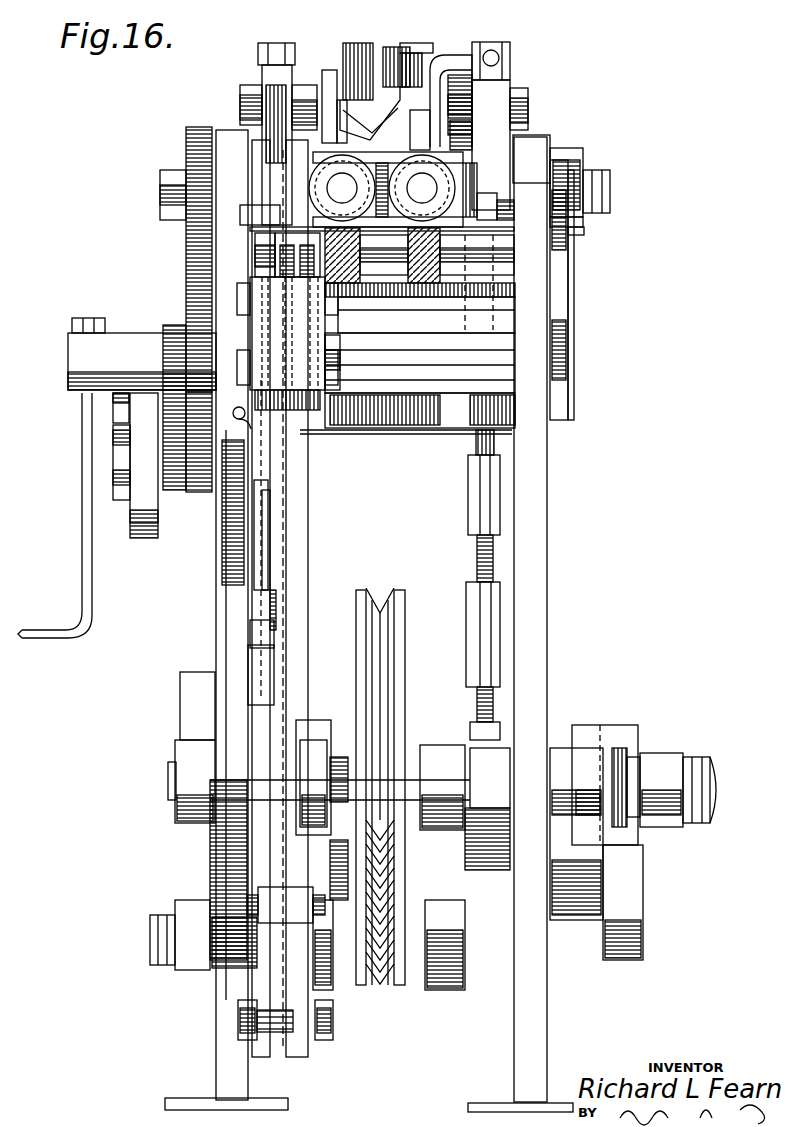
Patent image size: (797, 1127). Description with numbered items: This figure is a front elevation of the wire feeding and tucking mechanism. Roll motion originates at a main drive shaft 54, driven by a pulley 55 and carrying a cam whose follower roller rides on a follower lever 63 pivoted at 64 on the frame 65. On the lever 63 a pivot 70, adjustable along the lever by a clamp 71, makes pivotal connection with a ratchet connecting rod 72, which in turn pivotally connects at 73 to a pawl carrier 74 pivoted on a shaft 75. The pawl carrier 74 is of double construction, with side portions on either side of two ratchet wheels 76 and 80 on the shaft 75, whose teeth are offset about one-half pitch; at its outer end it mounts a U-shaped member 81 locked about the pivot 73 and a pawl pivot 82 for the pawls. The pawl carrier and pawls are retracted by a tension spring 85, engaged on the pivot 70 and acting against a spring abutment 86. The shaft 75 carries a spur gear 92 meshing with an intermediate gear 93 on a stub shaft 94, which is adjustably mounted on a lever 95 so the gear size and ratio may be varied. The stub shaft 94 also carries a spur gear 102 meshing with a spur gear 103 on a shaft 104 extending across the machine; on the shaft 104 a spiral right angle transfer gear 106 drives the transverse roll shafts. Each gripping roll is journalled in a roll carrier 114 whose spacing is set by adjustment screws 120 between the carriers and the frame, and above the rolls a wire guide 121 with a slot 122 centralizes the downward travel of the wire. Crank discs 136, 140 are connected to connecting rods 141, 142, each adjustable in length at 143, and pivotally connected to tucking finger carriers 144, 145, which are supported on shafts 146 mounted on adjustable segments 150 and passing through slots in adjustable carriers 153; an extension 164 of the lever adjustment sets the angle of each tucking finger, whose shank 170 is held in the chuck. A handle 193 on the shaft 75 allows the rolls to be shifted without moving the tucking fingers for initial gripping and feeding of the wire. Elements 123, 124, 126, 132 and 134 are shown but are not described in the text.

The main drive shaft 54 is at (168, 772).
The pulley 55 is at (396, 624).
The follower lever 63 is at (280, 990).
The pivot 64 is at (150, 940).
The frame 65 is at (216, 605).
The pivot 70 is at (210, 907).
The clamp 71 is at (333, 1020).
The ratchet connecting rod 72 is at (286, 676).
The ratchet connecting rod pivot 73 is at (357, 434).
The pawl carrier 74 is at (380, 332).
The shaft 75 is at (424, 357).
The ratchet wheel 76 is at (273, 240).
The ratchet wheel 80 is at (297, 251).
The U-shaped member 81 is at (340, 335).
The pawl pivot 82 is at (243, 302).
The tension spring 85 is at (226, 556).
The spring abutment 86 is at (234, 408).
The spur gear 92 is at (172, 325).
The intermediate gear 93 is at (155, 441).
The stub shaft 94 is at (113, 406).
The lever 95 is at (138, 540).
The spur gear 102 is at (199, 455).
The spur gear 103 is at (186, 150).
The shaft 104 is at (574, 262).
The spiral right angle transfer gear 106 is at (467, 286).
The roll carrier 114 is at (468, 195).
The adjustment screw 120 is at (252, 212).
The wire guide 121 is at (455, 60).
The slot 122 is at (362, 50).
The bolt 123 is at (713, 790).
The hub 124 is at (620, 732).
The slot 126 is at (640, 764).
The collar 132 is at (663, 830).
The gear 134 is at (628, 890).
The crank disc 136 is at (437, 988).
The crank disc 140 is at (312, 722).
The connecting rod 141 is at (477, 660).
The connecting rod 142 is at (253, 672).
The length adjustment 143 is at (477, 549).
The tucking finger carrier 144 is at (490, 102).
The tucking finger carrier 145 is at (258, 121).
The shaft 146 is at (610, 193).
The adjustable segment 150 is at (585, 224).
The adjustable carrier 153 is at (576, 230).
The extension 164 is at (486, 56).
The tucking finger shank 170 is at (365, 100).
The handle 193 is at (82, 487).